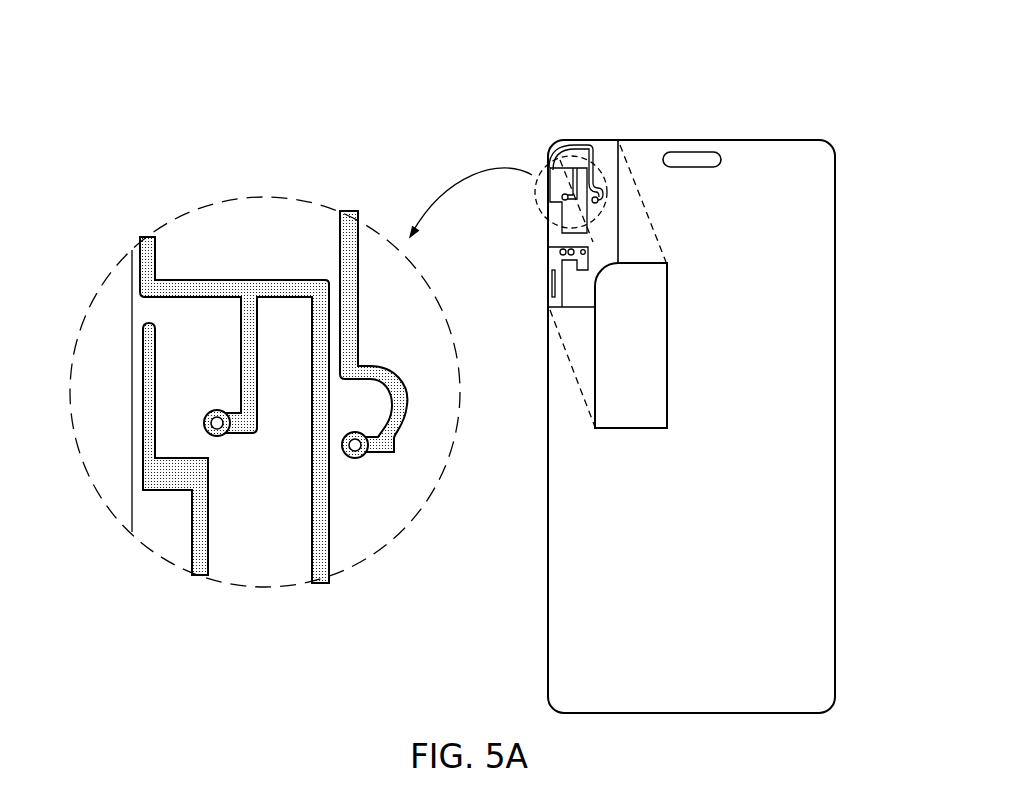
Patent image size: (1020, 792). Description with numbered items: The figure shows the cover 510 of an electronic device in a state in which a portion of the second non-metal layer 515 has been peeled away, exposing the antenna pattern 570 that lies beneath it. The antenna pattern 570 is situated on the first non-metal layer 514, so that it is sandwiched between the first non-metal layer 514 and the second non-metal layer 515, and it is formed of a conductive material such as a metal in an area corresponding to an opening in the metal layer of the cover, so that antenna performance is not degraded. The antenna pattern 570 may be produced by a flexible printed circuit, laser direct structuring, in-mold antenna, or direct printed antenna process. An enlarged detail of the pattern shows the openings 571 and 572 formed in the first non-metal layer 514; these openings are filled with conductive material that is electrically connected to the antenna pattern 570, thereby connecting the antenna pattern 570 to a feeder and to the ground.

The cover 510 is at (818, 86).
The first non-metal layer 514 is at (610, 146).
The second non-metal layer 515 is at (760, 146).
The antenna pattern 570 is at (573, 142).
The opening 571 is at (210, 425).
The opening 572 is at (361, 447).